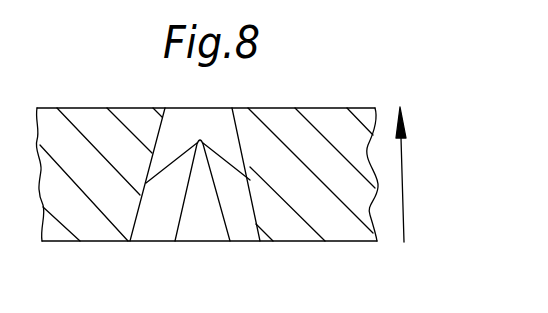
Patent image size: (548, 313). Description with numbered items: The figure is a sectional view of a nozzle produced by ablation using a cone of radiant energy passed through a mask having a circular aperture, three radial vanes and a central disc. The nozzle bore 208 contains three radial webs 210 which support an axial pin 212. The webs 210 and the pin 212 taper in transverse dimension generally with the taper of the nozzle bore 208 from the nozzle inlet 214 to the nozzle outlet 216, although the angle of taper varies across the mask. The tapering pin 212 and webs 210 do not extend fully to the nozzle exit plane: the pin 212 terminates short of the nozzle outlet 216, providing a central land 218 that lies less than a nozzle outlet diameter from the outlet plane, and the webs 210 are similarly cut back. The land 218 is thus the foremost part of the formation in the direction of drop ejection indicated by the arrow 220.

The nozzle bore 208 is at (261, 223).
The radial webs 210 is at (160, 243).
The axial pin 212 is at (208, 243).
The nozzle inlet 214 is at (128, 242).
The nozzle outlet 216 is at (220, 108).
The central land 218 is at (197, 139).
The direction of drop ejection 220 is at (406, 197).